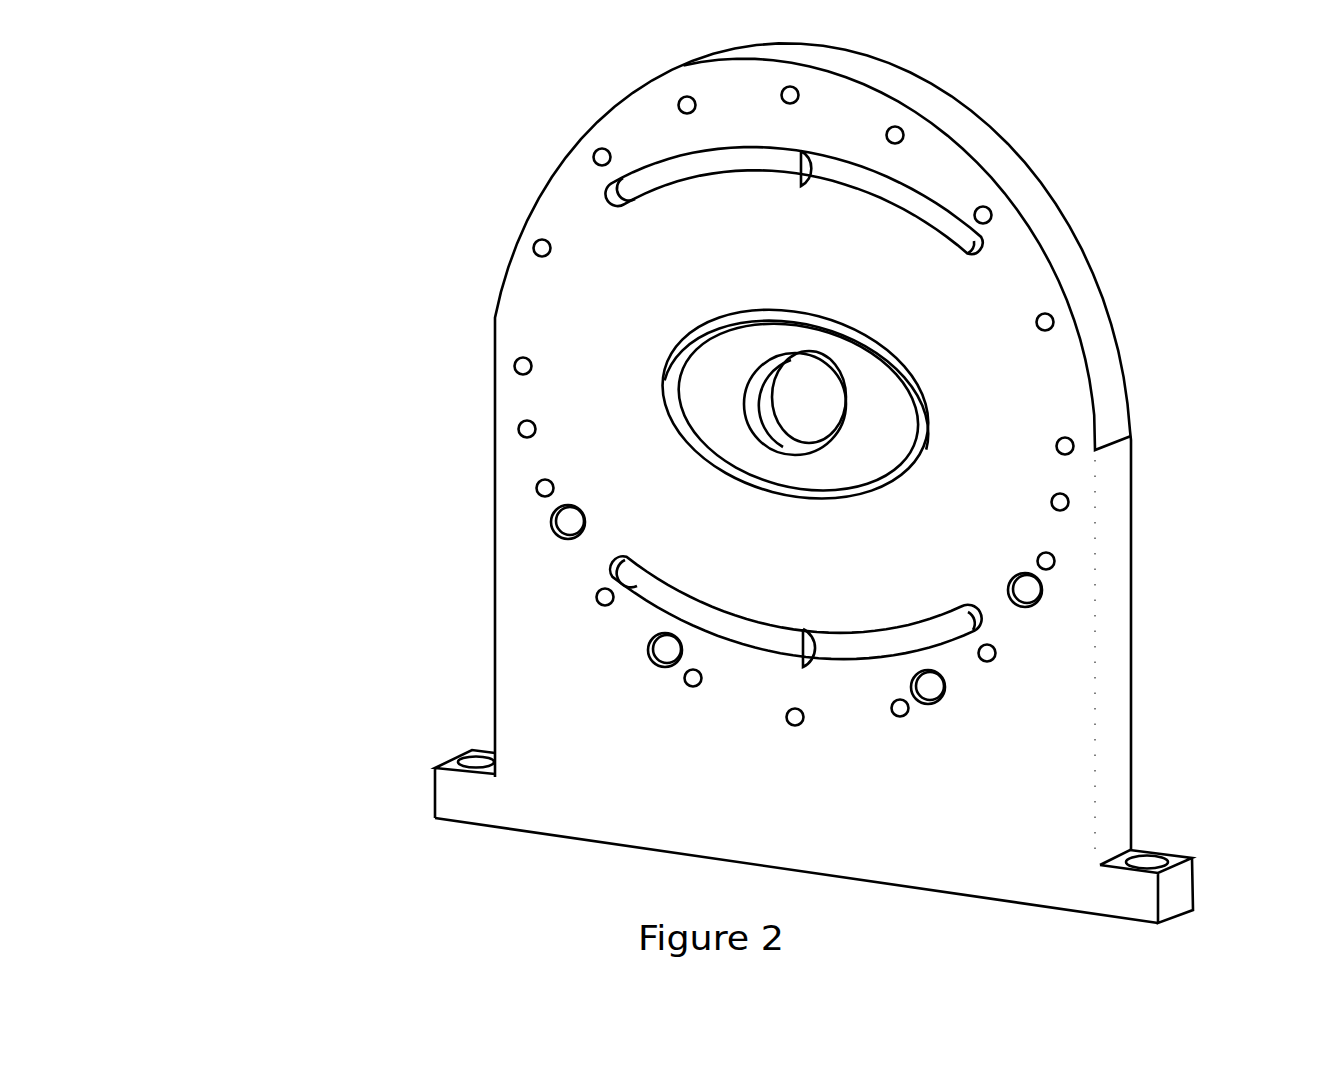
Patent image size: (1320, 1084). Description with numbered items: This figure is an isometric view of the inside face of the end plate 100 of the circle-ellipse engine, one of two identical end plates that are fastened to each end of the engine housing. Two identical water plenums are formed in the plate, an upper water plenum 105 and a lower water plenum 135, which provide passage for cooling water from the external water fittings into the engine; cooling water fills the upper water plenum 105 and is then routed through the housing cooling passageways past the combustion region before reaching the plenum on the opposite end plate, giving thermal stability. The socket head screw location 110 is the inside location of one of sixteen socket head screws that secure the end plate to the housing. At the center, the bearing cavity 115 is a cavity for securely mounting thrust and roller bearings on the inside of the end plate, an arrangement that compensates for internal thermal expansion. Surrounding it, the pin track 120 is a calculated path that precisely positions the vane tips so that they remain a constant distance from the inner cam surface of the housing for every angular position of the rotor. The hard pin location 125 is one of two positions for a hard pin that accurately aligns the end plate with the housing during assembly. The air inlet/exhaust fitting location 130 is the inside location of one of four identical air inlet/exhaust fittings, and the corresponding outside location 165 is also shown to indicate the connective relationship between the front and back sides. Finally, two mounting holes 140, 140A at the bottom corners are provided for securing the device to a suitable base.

The end plate 100 is at (233, 55).
The upper water plenum 105 is at (640, 158).
The socket head screw location 110 is at (513, 239).
The bearing cavity 115 is at (733, 391).
The pin track 120 is at (662, 432).
The hard pin location 125 is at (526, 481).
The air inlet/exhaust fitting location 130 is at (537, 521).
The lower water plenum 135 is at (638, 604).
The mounting hole 140 is at (440, 750).
The mounting hole 140A is at (1173, 843).
The air inlet/exhaust fitting location 165 is at (1056, 586).